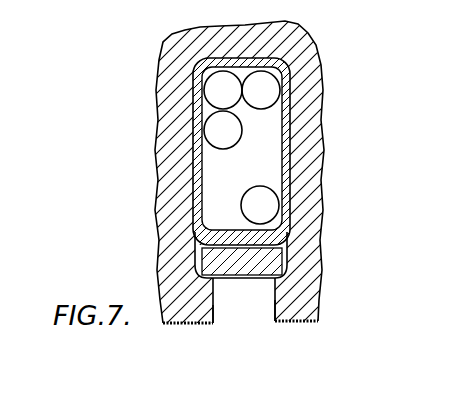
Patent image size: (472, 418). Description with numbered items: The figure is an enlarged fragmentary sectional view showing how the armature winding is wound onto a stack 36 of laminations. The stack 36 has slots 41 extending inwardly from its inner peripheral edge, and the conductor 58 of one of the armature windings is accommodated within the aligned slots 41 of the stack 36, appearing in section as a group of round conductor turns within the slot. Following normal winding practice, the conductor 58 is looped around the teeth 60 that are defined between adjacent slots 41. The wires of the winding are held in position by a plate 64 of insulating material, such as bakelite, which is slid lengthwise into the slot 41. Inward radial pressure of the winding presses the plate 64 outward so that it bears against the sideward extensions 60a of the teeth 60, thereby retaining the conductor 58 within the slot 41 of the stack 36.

The stack 36 is at (162, 152).
The conductor 58 is at (268, 90).
The plate of insulating material 64 is at (241, 288).
The slot 41 is at (255, 313).
The tooth 60 is at (180, 329).
The sideward extension of tooth 60a is at (218, 305).